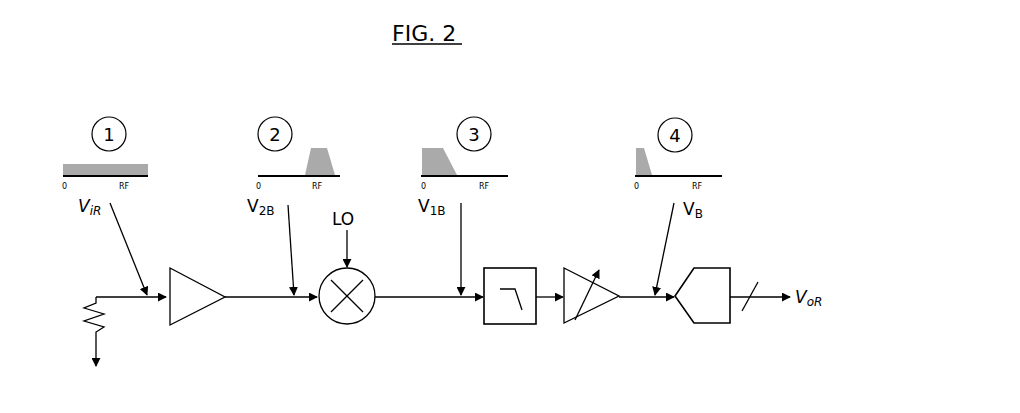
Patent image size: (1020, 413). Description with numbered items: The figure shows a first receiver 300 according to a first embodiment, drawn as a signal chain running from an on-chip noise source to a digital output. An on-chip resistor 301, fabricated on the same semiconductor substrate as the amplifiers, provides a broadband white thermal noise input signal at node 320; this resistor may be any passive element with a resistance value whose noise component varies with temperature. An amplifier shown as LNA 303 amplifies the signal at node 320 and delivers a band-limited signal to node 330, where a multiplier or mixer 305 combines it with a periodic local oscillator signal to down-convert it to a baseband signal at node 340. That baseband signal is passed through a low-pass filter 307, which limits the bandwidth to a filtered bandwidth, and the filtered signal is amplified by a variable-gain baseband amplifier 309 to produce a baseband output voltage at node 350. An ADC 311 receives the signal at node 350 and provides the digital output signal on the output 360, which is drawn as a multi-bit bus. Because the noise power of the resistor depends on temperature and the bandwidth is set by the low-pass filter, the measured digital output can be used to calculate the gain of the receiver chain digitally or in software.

The first receiver 300 is at (727, 96).
The on-chip resistor 301 is at (84, 320).
The LNA 303 is at (176, 326).
The multiplier and/or mixer 305 is at (343, 326).
The low-pass filter 307 is at (505, 325).
The variable-gain baseband amplifier 309 is at (569, 325).
The ADC 311 is at (706, 325).
The node 320 is at (122, 300).
The node 330 is at (263, 300).
The node 340 is at (422, 300).
The node 350 is at (635, 300).
The digital output bus 360 is at (767, 300).